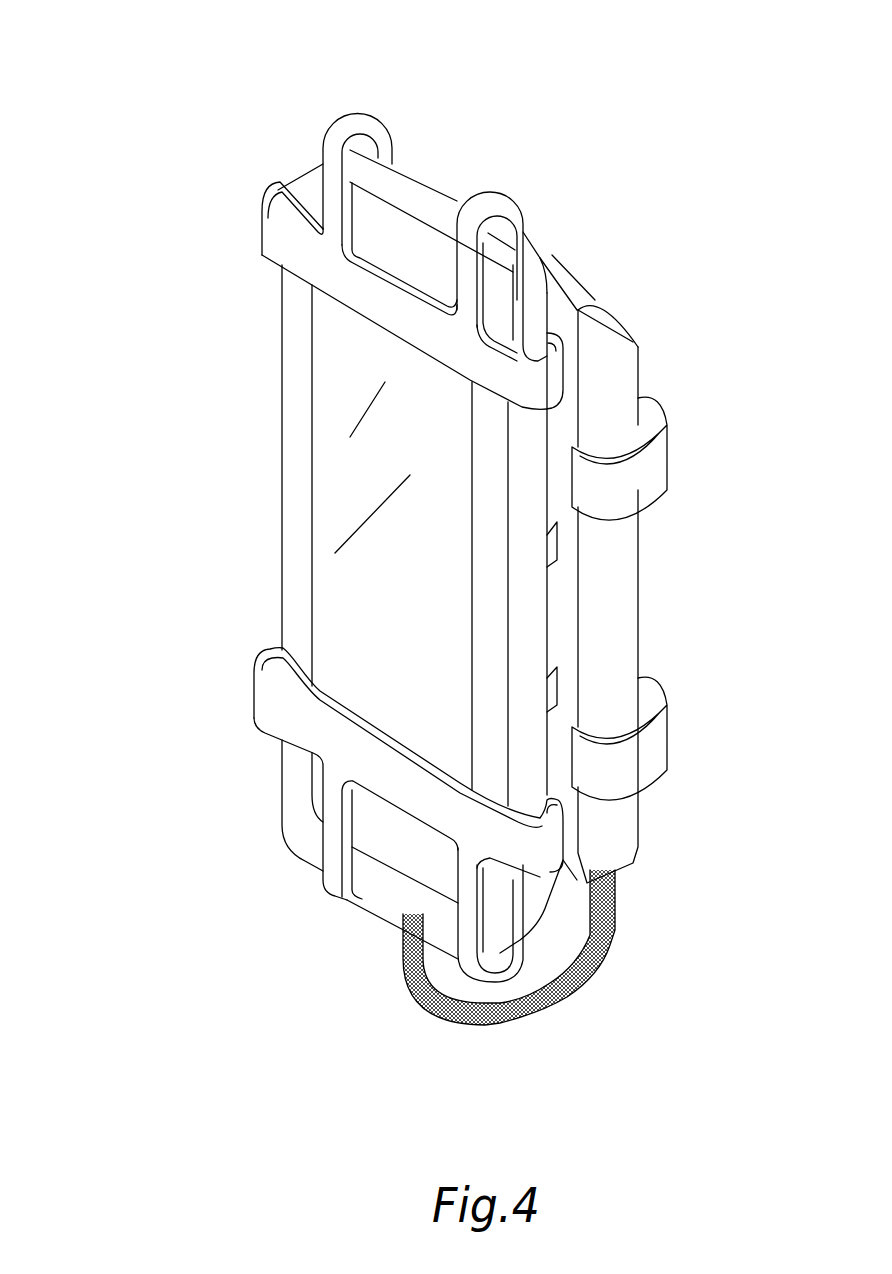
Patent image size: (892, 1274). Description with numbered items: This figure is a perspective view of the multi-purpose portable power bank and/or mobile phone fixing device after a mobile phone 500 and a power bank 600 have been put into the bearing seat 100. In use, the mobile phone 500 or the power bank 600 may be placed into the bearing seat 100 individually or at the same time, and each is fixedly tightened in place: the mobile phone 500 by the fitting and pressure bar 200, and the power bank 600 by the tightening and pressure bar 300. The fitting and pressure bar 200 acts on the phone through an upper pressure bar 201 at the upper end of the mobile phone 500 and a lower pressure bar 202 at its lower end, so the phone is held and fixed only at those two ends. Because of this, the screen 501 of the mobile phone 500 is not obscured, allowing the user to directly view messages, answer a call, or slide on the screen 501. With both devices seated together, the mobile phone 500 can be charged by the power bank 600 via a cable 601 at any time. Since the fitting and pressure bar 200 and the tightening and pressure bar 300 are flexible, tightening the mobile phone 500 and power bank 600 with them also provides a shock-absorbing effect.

The bearing seat 100 is at (385, 103).
The fitting and pressure bar 200 is at (231, 238).
The upper pressure bar 201 is at (283, 245).
The lower pressure bar 202 is at (275, 705).
The tightening and pressure bar 300 is at (678, 460).
The mobile phone 500 is at (297, 487).
The screen 501 is at (330, 563).
The power bank 600 is at (628, 583).
The cable 601 is at (597, 973).